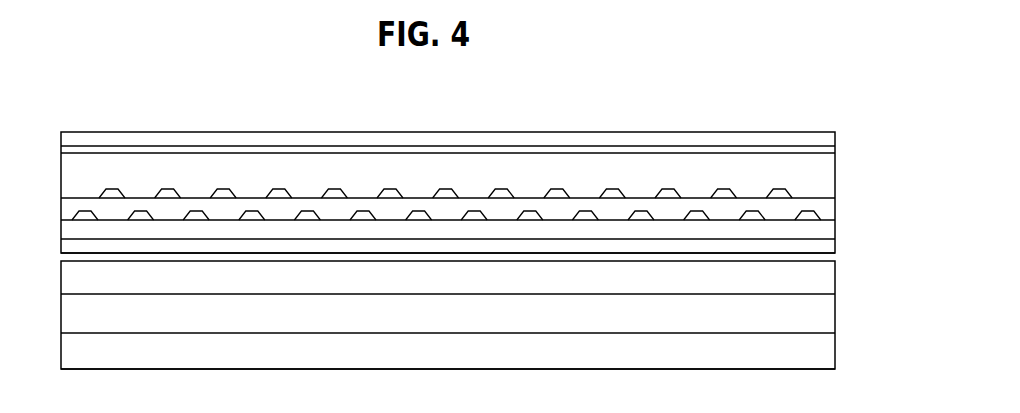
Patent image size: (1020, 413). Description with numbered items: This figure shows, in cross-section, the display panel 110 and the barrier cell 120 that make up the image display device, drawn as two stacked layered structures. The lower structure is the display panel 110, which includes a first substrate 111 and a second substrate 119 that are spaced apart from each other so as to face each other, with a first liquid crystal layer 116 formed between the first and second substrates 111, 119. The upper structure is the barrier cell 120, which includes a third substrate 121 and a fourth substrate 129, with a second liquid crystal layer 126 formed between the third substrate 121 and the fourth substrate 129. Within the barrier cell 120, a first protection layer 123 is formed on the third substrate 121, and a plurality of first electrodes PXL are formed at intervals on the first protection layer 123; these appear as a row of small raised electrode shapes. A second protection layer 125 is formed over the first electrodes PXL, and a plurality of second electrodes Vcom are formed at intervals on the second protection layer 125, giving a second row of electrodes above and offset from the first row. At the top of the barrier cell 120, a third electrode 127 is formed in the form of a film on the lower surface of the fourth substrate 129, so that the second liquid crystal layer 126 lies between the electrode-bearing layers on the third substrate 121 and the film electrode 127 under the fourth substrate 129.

The display panel 110 is at (60, 261).
The first substrate 111 is at (830, 352).
The first liquid crystal layer 116 is at (838, 294).
The second substrate 119 is at (830, 278).
The barrier cell 120 is at (60, 132).
The third substrate 121 is at (831, 243).
The first protection layer 123 is at (831, 224).
The second protection layer 125 is at (831, 206).
The second liquid crystal layer 126 is at (838, 153).
The third electrode 127 is at (833, 151).
The fourth substrate 129 is at (833, 138).
The first electrodes PXL is at (641, 213).
The second electrodes Vcom is at (723, 189).